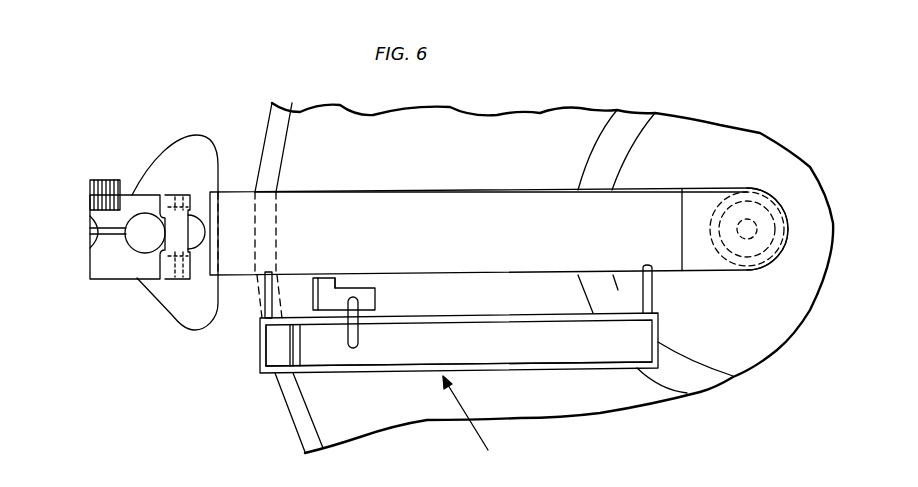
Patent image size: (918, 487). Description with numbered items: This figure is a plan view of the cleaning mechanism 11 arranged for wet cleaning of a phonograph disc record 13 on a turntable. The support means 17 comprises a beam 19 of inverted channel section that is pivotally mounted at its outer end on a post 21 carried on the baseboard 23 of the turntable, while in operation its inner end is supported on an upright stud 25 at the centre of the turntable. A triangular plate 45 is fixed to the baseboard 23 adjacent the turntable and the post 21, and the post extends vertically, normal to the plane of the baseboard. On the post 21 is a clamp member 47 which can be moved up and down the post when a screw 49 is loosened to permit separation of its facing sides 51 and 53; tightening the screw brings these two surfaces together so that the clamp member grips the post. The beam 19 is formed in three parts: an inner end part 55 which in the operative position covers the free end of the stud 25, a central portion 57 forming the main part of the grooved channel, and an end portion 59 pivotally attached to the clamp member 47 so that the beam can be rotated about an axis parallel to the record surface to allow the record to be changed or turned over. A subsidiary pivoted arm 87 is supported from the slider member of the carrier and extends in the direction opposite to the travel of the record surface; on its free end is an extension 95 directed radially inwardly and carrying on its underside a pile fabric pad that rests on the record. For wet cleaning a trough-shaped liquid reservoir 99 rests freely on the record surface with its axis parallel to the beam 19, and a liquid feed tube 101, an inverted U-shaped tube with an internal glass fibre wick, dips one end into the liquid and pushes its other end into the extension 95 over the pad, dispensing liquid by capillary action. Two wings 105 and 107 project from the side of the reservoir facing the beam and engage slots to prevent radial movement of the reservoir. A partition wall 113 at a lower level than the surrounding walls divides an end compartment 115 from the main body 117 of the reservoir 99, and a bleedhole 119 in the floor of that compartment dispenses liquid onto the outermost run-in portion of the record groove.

The cleaning mechanism 11 is at (196, 371).
The phonograph disc record 13 is at (489, 167).
The support means 17 is at (347, 191).
The beam 19 is at (434, 245).
The post 21 is at (143, 247).
The baseboard 23 is at (124, 382).
The upright stud 25 is at (752, 237).
The triangular plate 45 is at (187, 317).
The clamp member 47 is at (108, 282).
The screw 49 is at (95, 178).
The facing side 51 is at (102, 226).
The facing side 53 is at (102, 243).
The inner end part 55 is at (698, 198).
The central portion 57 is at (536, 272).
The end portion 59 is at (197, 197).
The subsidiary pivoted arm 87 is at (307, 277).
The extension 95 is at (332, 277).
The liquid reservoir 99 is at (545, 347).
The liquid feed tube 101 is at (360, 335).
The wing 105 is at (262, 297).
The wing 107 is at (652, 290).
The partition wall 113 is at (298, 357).
The end compartment 115 is at (270, 363).
The main body 117 is at (470, 357).
The bleedhole 119 is at (280, 345).